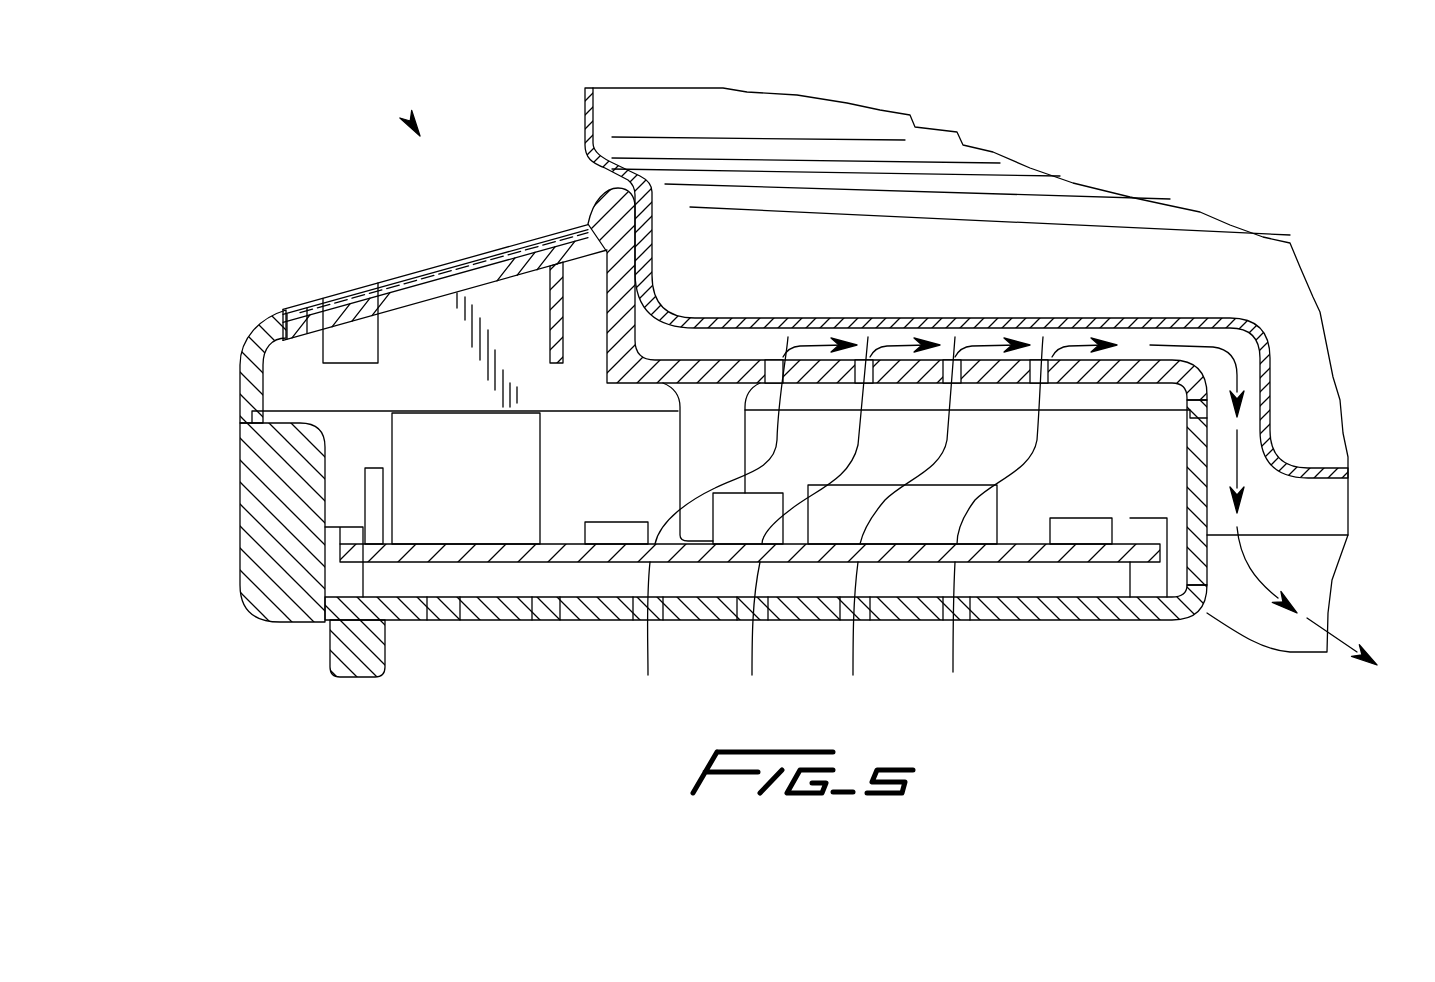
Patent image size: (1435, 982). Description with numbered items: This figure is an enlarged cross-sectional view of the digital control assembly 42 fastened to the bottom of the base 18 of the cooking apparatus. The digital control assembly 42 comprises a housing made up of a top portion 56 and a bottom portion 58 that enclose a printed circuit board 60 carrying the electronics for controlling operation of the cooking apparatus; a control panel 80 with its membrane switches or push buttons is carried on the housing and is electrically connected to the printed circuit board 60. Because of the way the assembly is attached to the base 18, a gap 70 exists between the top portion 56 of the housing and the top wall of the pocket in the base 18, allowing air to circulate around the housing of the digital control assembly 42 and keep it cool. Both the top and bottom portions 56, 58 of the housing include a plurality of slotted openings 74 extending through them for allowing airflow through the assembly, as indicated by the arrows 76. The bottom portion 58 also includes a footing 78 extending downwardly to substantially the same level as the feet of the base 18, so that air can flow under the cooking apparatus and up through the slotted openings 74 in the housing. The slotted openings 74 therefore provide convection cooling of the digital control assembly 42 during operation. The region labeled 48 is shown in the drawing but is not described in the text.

The base 18 is at (585, 103).
The digital control assembly 42 is at (410, 120).
The air outlet gap 48 is at (1240, 428).
The top portion 56 is at (267, 323).
The bottom portion 58 is at (262, 532).
The printed circuit board 60 is at (563, 542).
The gap 70 is at (730, 343).
The slotted openings 74 is at (864, 360).
The arrows 76 is at (803, 490).
The footing 78 is at (356, 668).
The control panel 80 is at (457, 258).